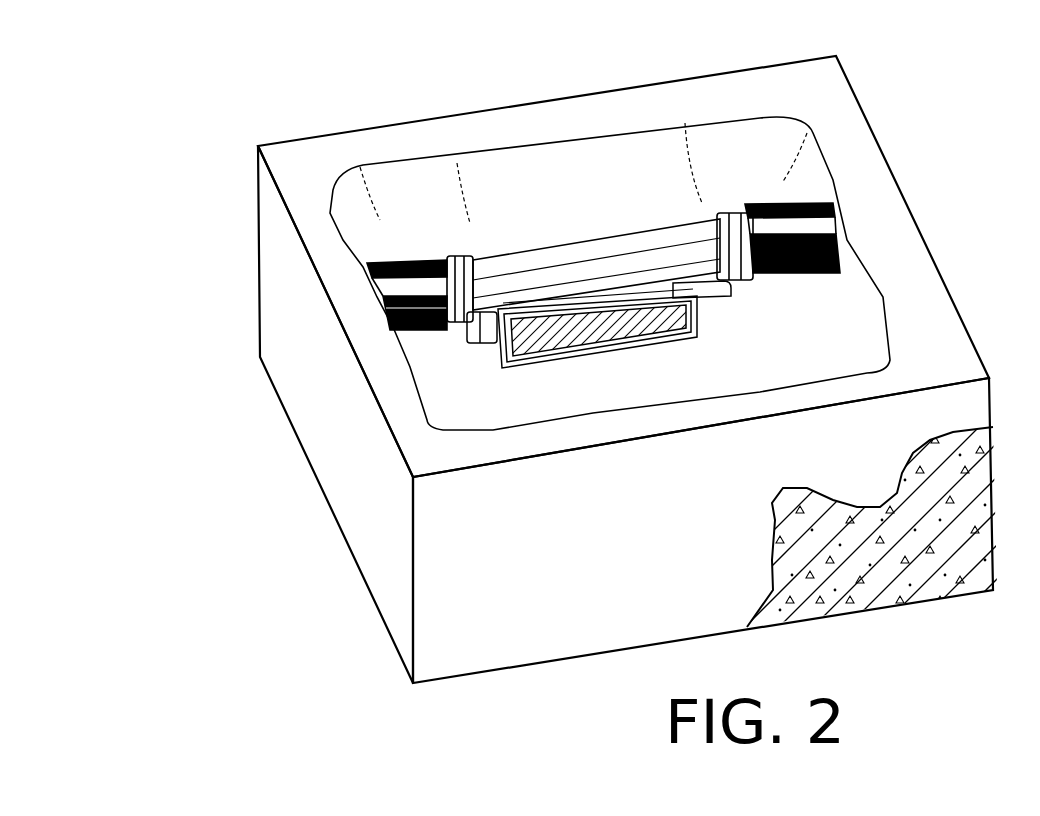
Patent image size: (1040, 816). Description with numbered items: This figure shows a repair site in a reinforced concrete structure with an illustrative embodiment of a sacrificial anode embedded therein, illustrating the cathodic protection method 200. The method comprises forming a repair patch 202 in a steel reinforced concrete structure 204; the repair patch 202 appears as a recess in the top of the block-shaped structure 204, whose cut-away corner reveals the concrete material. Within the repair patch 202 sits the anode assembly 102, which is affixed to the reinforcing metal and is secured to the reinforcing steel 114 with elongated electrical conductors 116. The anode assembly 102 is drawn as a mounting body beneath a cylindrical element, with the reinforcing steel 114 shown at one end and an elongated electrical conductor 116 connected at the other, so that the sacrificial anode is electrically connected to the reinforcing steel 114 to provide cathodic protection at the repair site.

The cathodic protection method 200 is at (232, 93).
The repair patch 202 is at (567, 170).
The steel reinforced concrete structure 204 is at (287, 417).
The reinforcing steel 114 is at (790, 222).
The elongated electrical conductor 116 is at (467, 253).
The anode assembly 102 is at (697, 318).